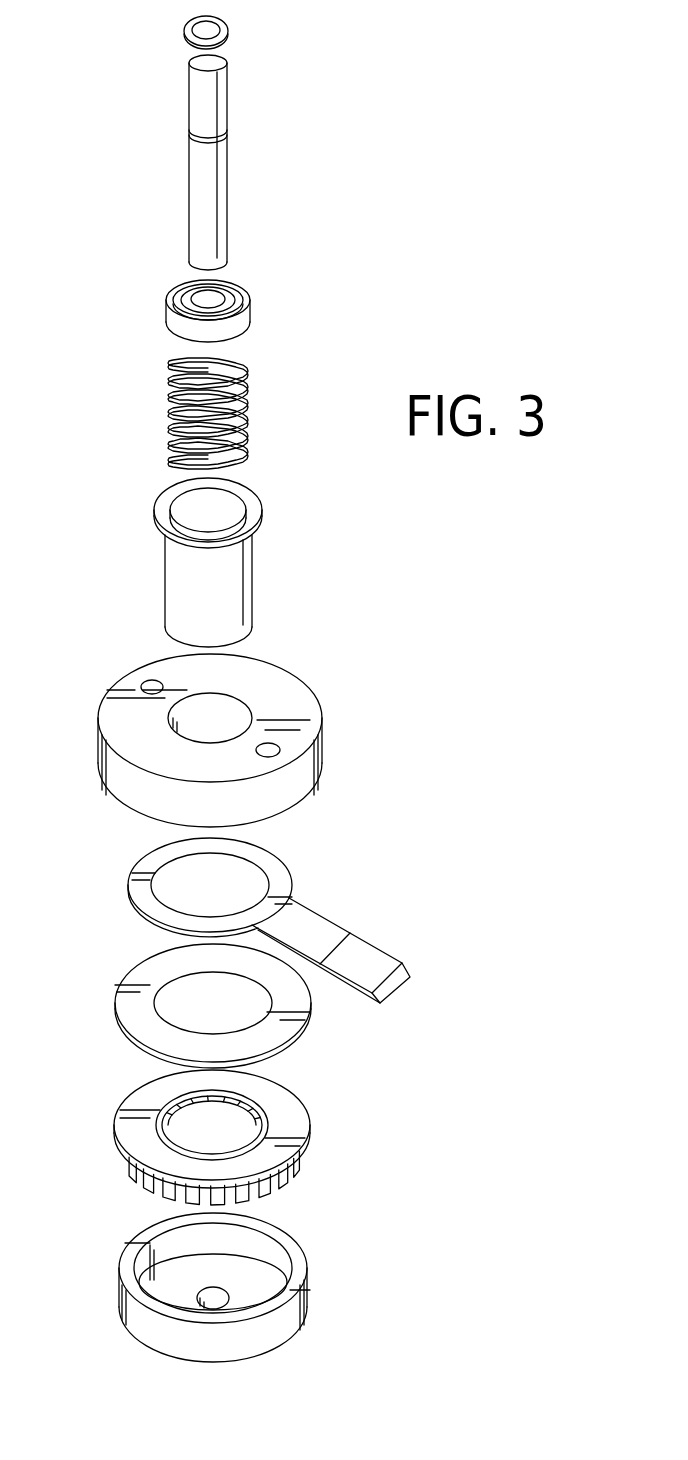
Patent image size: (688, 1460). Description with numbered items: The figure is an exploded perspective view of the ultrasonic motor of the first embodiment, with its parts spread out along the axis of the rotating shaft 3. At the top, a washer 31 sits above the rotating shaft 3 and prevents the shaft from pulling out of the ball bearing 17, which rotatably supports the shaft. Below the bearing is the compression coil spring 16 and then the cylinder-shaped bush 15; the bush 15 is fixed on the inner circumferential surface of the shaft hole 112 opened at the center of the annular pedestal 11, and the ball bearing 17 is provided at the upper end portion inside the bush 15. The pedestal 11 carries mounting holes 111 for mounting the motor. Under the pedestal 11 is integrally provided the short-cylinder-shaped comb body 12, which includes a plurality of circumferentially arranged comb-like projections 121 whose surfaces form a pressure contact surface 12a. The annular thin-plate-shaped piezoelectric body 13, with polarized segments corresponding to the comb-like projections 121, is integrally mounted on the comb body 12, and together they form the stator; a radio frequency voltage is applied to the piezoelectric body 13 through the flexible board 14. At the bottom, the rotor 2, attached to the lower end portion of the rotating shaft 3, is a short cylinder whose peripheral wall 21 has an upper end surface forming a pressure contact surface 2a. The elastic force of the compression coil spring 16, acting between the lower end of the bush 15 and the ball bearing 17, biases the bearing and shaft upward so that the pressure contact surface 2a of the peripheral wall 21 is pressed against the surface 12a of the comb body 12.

The rotor 2 is at (295, 1323).
The pressure contact surface 2a is at (128, 1265).
The peripheral wall 21 is at (150, 1328).
The rotating shaft 3 is at (196, 158).
The washer 31 is at (228, 30).
The annular pedestal 11 is at (125, 783).
The mounting holes 111 is at (150, 682).
The shaft hole 112 is at (233, 710).
The comb body 12 is at (290, 1107).
The pressure contact surface 12a is at (130, 1175).
The comb-like projections 121 is at (295, 1185).
The piezoelectric body 13 is at (125, 1012).
The flexible board 14 is at (305, 928).
The bush 15 is at (247, 573).
The compression coil spring 16 is at (170, 410).
The ball bearing 17 is at (250, 313).